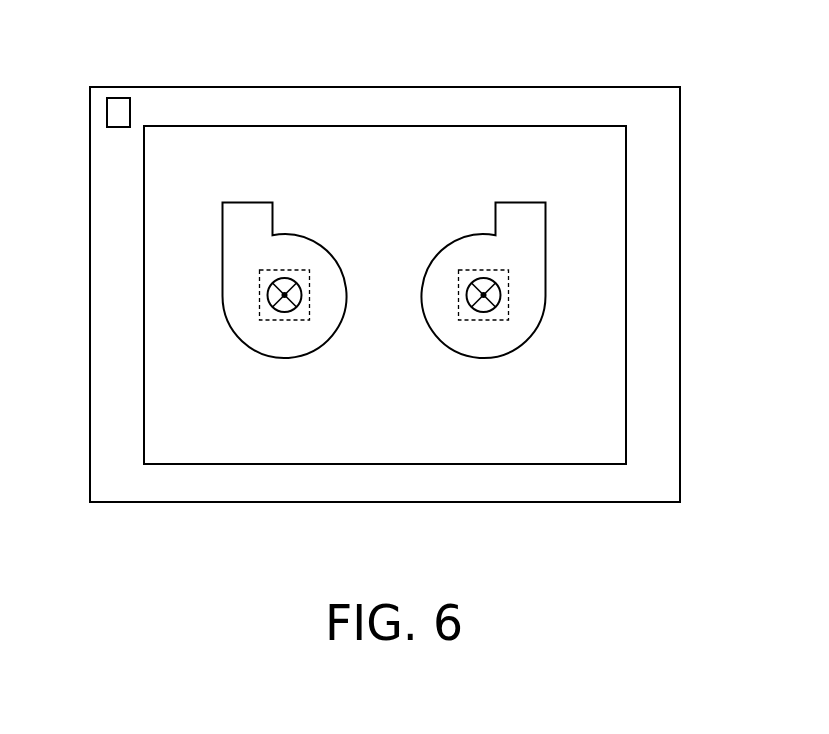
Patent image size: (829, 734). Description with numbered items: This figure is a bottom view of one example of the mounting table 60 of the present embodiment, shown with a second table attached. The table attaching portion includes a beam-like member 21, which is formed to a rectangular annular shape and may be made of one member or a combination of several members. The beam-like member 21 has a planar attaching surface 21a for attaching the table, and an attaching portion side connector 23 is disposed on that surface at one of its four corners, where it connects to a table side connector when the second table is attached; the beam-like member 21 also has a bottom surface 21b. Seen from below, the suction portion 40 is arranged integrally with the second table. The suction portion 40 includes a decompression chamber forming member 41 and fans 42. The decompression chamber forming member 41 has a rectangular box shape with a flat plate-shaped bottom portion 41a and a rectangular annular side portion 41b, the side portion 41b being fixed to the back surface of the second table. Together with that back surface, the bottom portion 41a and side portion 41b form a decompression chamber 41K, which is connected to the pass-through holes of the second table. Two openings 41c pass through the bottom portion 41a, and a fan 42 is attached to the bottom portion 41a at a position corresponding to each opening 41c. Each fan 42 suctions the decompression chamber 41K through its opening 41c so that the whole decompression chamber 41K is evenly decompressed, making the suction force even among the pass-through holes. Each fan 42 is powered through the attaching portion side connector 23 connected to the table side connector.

The mounting table 60 is at (645, 73).
The beam-like member 21 is at (680, 222).
The attaching surface 21a is at (596, 103).
The bottom surface 21b is at (653, 103).
The attaching portion side connector 23 is at (120, 113).
The suction portion 40 is at (581, 466).
The decompression chamber forming member 41 is at (605, 402).
The bottom portion 41a is at (370, 435).
The side portion 41b is at (145, 358).
The opening 41c is at (285, 322).
The decompression chamber 41K is at (480, 153).
The fan 42 is at (240, 300).